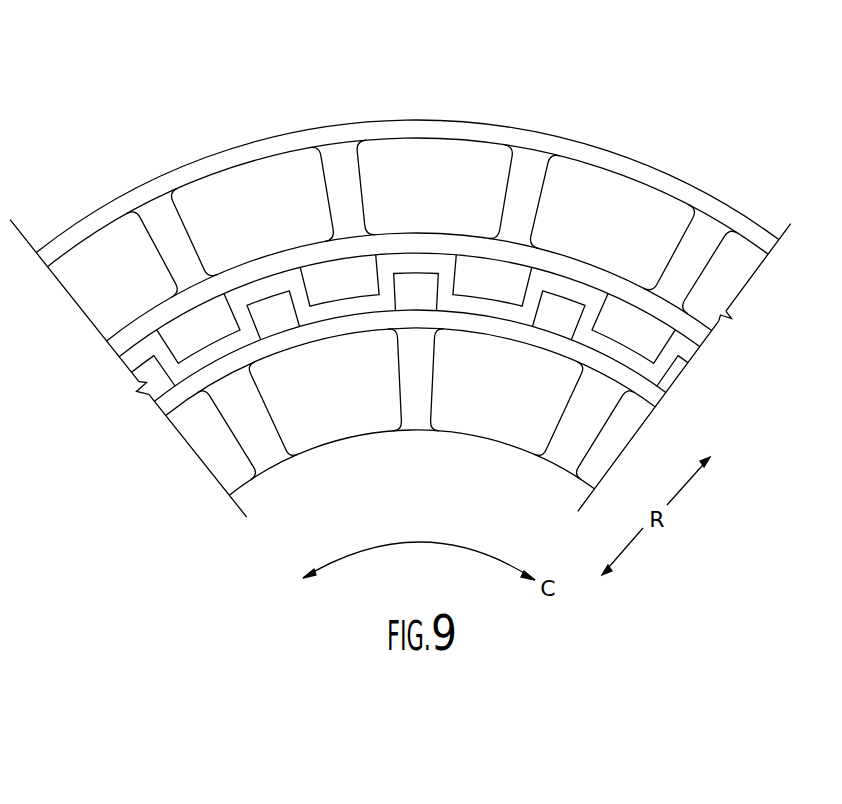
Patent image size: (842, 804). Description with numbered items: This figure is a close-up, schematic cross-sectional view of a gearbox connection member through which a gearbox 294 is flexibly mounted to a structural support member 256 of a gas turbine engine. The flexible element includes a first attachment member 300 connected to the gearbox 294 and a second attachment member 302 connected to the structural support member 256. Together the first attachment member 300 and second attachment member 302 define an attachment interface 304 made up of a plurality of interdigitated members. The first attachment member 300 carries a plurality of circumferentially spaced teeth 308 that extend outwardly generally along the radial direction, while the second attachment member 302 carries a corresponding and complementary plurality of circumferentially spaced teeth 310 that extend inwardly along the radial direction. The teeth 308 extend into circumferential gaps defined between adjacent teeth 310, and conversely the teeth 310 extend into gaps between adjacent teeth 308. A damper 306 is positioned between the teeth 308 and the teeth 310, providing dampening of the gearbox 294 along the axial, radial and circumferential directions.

The structural support member 256 is at (247, 142).
The gearbox 294 is at (240, 466).
The first attachment member 300 is at (403, 402).
The second attachment member 302 is at (342, 162).
The attachment interface 304 is at (463, 277).
The damper 306 is at (427, 262).
The teeth 308 is at (553, 318).
The teeth 310 is at (330, 273).